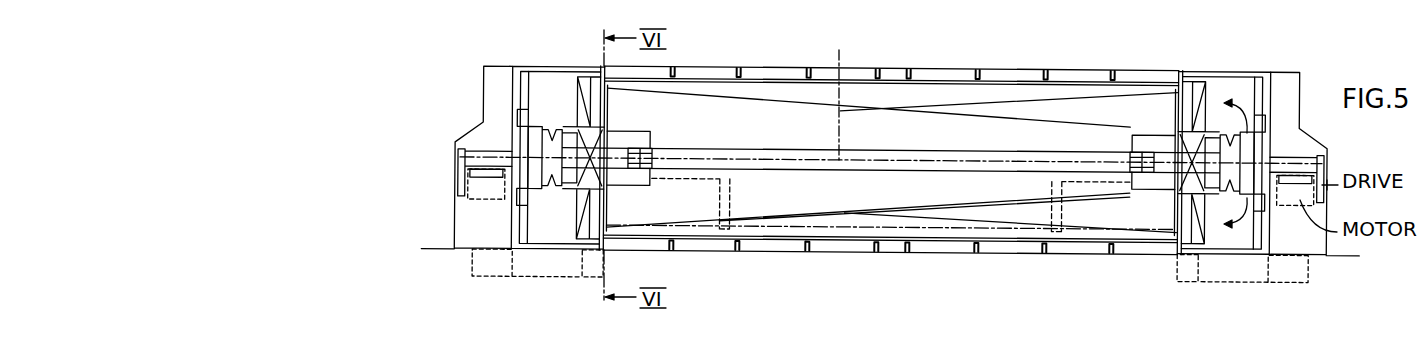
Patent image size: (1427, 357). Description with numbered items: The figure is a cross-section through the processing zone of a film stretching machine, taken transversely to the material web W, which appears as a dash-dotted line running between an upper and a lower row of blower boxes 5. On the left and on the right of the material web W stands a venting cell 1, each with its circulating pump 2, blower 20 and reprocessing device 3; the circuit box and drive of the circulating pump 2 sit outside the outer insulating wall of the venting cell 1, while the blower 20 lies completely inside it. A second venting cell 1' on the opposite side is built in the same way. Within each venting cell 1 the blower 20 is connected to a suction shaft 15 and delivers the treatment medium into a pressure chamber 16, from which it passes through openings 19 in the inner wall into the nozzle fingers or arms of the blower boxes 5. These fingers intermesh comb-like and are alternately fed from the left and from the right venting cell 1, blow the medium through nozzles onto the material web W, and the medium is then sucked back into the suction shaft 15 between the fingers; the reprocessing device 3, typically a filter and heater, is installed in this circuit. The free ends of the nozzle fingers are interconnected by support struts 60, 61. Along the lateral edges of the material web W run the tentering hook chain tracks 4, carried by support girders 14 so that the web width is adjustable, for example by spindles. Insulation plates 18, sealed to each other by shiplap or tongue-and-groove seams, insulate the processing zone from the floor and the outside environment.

The venting cell 1 is at (890, 183).
The second drum apparatus 1' is at (1092, 343).
The circulating pump 2 is at (452, 134).
The reprocessing device 3 is at (598, 148).
The tentering hook chain tracks 4 is at (657, 128).
The blower boxes 5 is at (736, 112).
The support girders 14 is at (692, 180).
The suction shaft 15 is at (572, 178).
The pressure chamber 16 is at (540, 90).
The insulation plates 18 is at (1012, 74).
The openings 19 is at (825, 347).
The blower 20 is at (530, 147).
The support strut 60 is at (653, 131).
The support strut 61 is at (1150, 118).
The material web W is at (843, 93).